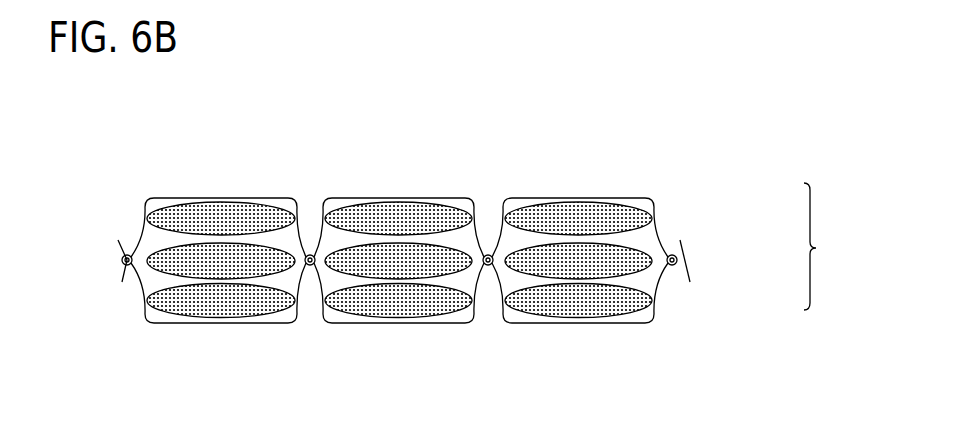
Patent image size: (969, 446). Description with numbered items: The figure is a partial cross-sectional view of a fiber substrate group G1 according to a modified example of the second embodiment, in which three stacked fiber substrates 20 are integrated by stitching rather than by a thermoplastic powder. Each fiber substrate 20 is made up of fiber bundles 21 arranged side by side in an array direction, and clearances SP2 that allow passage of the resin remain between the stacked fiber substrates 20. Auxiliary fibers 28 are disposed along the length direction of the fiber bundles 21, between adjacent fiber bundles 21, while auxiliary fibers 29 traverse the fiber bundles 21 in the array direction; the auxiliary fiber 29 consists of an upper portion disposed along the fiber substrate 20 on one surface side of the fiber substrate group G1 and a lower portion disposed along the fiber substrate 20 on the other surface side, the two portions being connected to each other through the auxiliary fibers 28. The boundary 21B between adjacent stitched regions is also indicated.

The fiber substrate 20 is at (435, 257).
The fiber bundle 21 is at (183, 199).
The boundary portion between cushion units 21B is at (486, 199).
The auxiliary fiber 28 is at (312, 236).
The auxiliary fiber 29 is at (626, 200).
The clearance SP2 is at (161, 281).
The fiber substrate group G1 is at (822, 246).